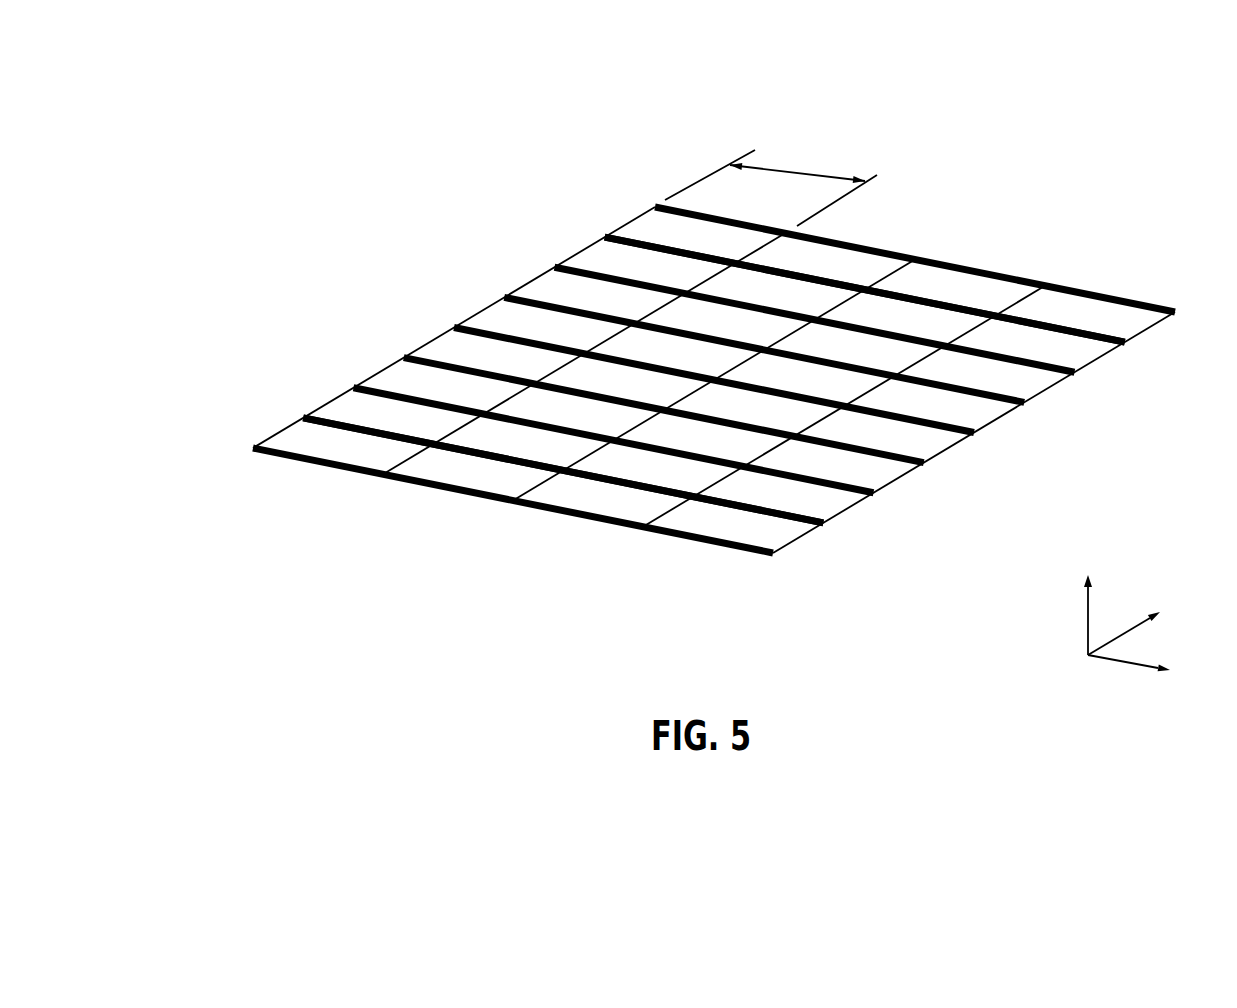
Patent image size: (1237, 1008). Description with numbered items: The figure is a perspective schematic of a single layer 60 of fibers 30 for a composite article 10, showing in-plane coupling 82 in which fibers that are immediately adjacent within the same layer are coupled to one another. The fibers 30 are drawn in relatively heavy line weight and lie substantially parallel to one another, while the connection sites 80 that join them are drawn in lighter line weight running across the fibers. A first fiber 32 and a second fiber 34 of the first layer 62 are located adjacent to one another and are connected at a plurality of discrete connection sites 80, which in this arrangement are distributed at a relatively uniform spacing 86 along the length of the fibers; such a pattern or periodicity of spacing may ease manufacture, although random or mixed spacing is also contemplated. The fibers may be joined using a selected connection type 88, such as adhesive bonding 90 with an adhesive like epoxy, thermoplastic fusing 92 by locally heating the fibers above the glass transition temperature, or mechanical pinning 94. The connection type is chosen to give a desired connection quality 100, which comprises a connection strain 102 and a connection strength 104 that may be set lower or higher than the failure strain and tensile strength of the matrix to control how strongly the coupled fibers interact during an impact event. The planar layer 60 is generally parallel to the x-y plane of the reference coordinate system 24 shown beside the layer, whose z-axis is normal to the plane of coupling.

The composite article 10 is at (1071, 130).
The reference coordinate system 24 is at (1090, 657).
The fibers 30 is at (608, 482).
The first fiber 32 is at (332, 475).
The second fiber 34 is at (355, 423).
The layer 60 is at (774, 553).
The first layer 62 is at (253, 448).
The connection sites 80 is at (303, 420).
The in-plane coupling 82 is at (267, 455).
The spacing 86 is at (800, 172).
The connection type 88 is at (405, 358).
The adhesive bonding 90 is at (505, 298).
The thermoplastic fusing 92 is at (973, 433).
The mechanical pinning 94 is at (1074, 372).
The connection quality 100 is at (605, 237).
The connection strain 102 is at (697, 500).
The connection strength 104 is at (1025, 403).